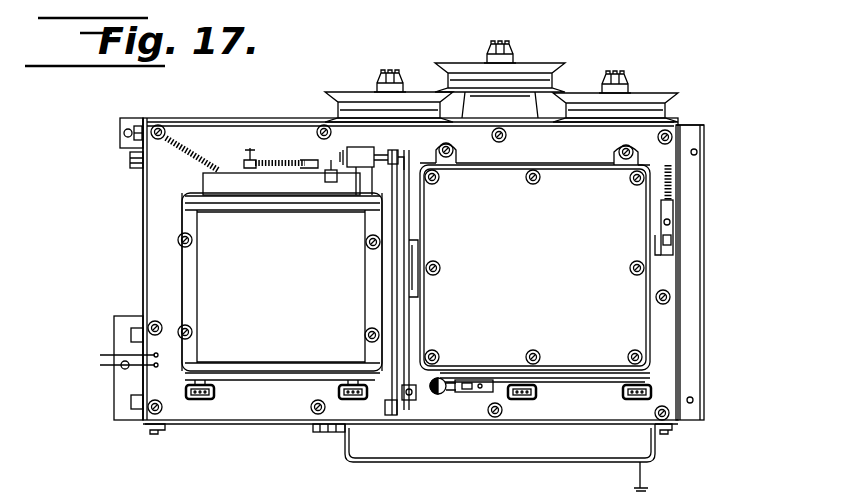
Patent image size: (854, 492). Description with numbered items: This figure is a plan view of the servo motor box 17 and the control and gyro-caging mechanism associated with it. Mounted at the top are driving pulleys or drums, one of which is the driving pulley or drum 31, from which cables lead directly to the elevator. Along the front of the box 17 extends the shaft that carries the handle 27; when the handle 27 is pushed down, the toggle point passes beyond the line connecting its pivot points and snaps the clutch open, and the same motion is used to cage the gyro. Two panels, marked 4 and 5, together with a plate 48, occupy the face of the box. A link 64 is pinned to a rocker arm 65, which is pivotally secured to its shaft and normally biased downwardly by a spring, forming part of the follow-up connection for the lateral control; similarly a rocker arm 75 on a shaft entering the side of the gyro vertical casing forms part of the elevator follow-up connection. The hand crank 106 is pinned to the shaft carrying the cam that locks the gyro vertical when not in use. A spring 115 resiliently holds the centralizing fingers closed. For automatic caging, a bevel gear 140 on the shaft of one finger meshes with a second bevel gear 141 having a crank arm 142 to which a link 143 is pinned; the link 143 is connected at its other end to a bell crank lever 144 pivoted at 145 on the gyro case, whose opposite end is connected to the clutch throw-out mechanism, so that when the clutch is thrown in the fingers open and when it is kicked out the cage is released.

The left door panel 4 is at (282, 286).
The right door panel 5 is at (535, 273).
The servo motor box 17 is at (683, 318).
The handle 27 is at (658, 477).
The driving pulley or drum 31 is at (668, 95).
The panel plate 48 is at (281, 287).
The link 64 is at (477, 380).
The rocker arm 65 is at (449, 398).
The rocker arm 75 is at (674, 204).
The hand crank 106 is at (406, 300).
The spring 115 is at (303, 136).
The bevel gear 140 is at (336, 178).
The second bevel gear 141 is at (341, 157).
The crank arm 142 is at (394, 151).
The link 143 is at (397, 180).
The bell crank lever 144 is at (390, 415).
The pivot 145 is at (412, 400).